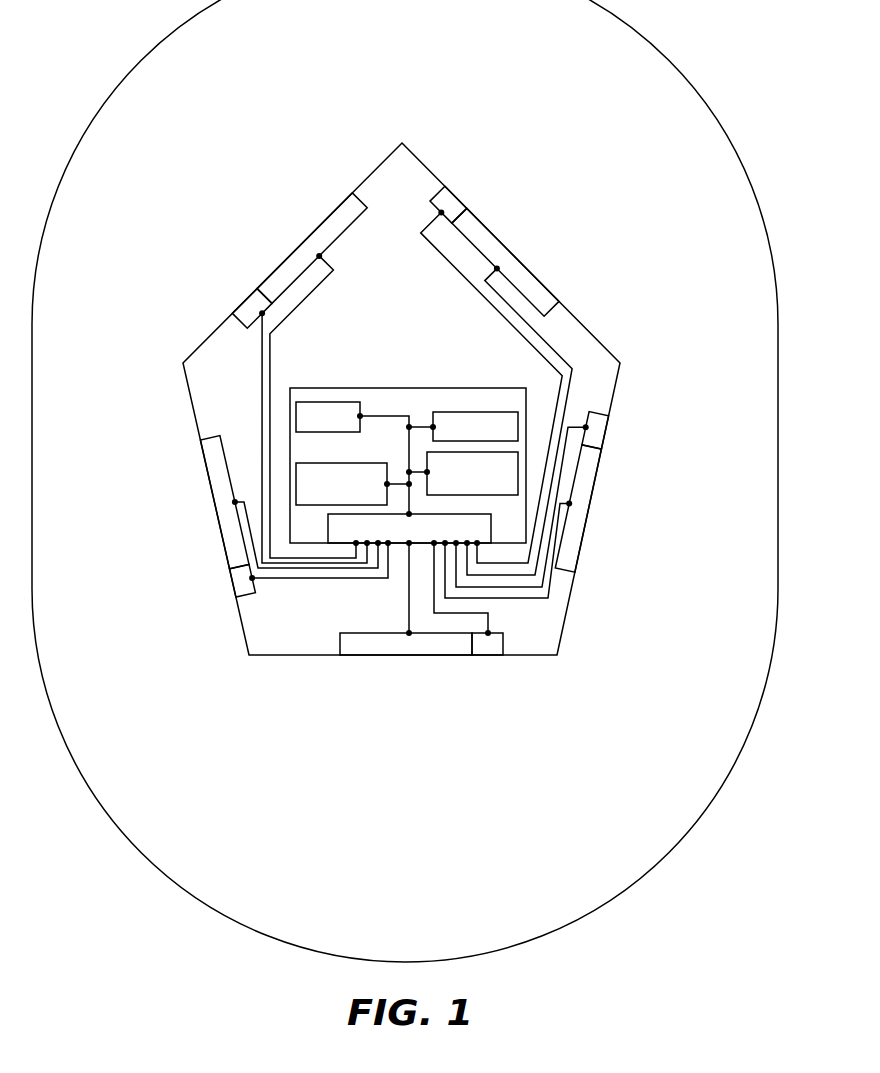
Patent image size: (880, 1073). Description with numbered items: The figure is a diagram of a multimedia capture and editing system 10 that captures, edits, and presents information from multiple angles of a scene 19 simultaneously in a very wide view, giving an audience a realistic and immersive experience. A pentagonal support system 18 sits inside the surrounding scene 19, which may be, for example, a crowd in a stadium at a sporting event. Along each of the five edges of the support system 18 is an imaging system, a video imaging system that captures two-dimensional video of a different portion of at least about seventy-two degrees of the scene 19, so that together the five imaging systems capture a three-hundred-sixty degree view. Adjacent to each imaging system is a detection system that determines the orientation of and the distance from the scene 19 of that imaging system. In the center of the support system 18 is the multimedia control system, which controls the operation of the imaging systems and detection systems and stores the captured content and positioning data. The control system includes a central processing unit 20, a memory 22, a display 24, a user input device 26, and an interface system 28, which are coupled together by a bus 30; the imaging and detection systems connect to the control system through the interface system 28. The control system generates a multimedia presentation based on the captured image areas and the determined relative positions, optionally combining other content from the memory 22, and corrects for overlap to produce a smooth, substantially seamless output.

The multimedia capture and editing system 10 is at (285, 132).
The support system 18 is at (566, 620).
The scene 19 is at (779, 337).
The central processing unit 20 is at (329, 400).
The memory 22 is at (307, 470).
The display 24 is at (507, 413).
The user input device 26 is at (504, 487).
The interface system 28 is at (343, 527).
The bus 30 is at (378, 416).